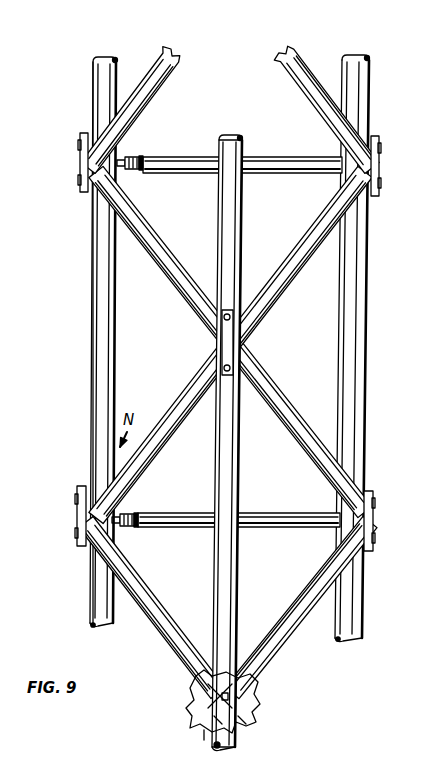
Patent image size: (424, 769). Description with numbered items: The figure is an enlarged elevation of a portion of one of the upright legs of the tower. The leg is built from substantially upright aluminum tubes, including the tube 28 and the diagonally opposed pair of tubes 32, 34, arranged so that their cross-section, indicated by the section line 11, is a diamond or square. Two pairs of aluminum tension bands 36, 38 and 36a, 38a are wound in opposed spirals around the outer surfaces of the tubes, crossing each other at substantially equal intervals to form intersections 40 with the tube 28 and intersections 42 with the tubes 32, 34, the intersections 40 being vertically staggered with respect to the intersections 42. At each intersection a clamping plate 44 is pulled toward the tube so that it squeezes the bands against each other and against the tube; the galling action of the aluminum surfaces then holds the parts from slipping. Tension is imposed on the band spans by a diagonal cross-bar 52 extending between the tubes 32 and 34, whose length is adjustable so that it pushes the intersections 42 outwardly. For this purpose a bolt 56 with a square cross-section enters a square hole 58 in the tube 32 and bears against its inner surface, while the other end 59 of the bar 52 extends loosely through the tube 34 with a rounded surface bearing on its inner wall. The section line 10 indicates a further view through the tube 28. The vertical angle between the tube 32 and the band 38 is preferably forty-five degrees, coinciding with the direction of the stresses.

The section line 10- 10 is at (237, 258).
The section line 11- 11 is at (62, 432).
The upright tube 28 is at (229, 485).
The upright tube 32 is at (98, 337).
The upright tube 34 is at (350, 403).
The tension band 36 is at (284, 400).
The tension band 36a is at (290, 56).
The tension band 38 is at (173, 403).
The tension band 38a is at (155, 72).
The intersection 40 is at (259, 342).
The intersection 42 is at (58, 167).
The clamping plate 44 is at (374, 162).
The diagonal cross-bar 52 is at (307, 163).
The bolt 56 is at (127, 512).
The square hole 58 is at (227, 703).
The other end of bar 59 is at (261, 765).